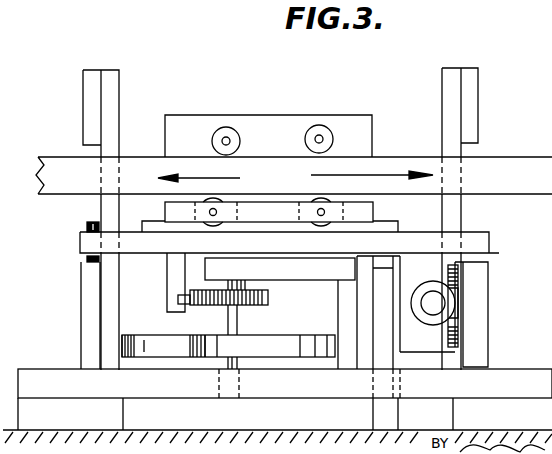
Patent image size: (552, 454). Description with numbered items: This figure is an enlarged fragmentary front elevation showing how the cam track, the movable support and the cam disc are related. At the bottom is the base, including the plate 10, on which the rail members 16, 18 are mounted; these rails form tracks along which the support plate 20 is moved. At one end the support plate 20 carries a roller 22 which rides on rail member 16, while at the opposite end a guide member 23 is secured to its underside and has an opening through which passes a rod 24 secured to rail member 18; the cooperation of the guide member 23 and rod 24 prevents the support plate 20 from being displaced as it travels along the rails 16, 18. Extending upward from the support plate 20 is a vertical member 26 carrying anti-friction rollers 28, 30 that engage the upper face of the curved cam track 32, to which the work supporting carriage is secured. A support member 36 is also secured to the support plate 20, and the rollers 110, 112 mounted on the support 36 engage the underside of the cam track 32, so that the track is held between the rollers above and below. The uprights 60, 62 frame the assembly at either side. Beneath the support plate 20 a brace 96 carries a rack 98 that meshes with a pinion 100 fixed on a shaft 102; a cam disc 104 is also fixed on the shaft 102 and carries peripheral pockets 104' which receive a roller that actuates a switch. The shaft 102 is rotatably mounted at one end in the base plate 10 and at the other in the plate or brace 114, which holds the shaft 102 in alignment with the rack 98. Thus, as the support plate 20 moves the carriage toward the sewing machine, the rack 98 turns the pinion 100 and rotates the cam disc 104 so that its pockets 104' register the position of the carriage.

The plate 10 is at (256, 390).
The rail member 16 is at (90, 305).
The rail member 18 is at (482, 320).
The support plate 20 is at (411, 246).
The roller 22 is at (87, 224).
The guide member 23 is at (422, 342).
The rod 24 is at (438, 302).
The vertical member 26 is at (283, 115).
The anti-friction roller 28 is at (240, 143).
The anti-friction roller 30 is at (333, 143).
The cam track 32 is at (393, 165).
The support member 36 is at (361, 212).
The upright 60 is at (119, 96).
The upright 62 is at (446, 96).
The brace 96 is at (177, 265).
The rack 98 is at (186, 303).
The pinion 100 is at (268, 295).
The shaft 102 is at (238, 321).
The cam disc 104 is at (229, 333).
The pocket 104' is at (234, 365).
The roller 110 is at (208, 232).
The roller 112 is at (321, 233).
The plate or brace 114 is at (280, 270).